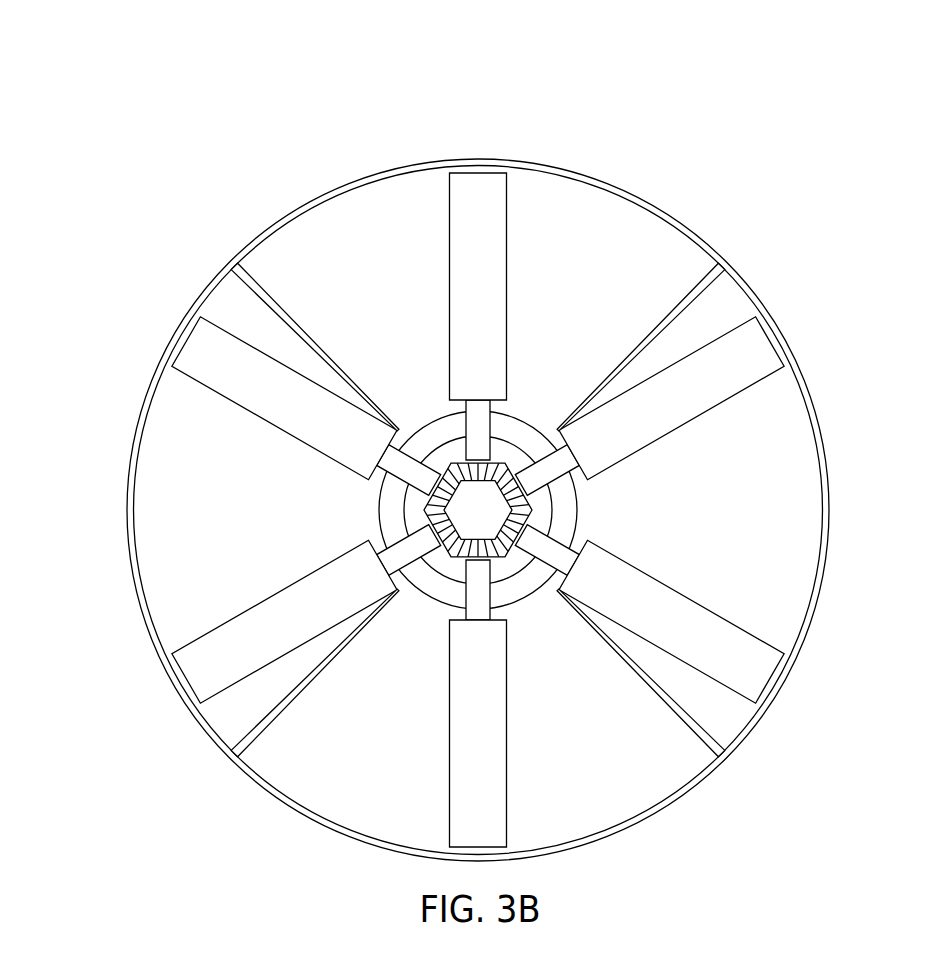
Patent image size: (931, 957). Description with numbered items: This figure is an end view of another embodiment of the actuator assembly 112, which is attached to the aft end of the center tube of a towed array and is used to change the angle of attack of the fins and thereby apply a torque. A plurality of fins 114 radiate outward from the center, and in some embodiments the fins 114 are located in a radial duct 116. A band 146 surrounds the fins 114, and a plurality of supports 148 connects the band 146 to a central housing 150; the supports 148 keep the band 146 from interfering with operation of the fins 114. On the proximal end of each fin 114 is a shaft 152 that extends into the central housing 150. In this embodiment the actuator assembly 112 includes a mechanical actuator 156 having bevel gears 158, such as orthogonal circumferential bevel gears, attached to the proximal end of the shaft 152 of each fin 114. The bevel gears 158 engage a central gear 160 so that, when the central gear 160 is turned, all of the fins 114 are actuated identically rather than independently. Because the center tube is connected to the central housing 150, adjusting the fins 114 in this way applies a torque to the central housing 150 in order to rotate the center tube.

The actuator assembly 112 is at (266, 83).
The fins 114 is at (476, 193).
The radial duct 116 is at (222, 272).
The band 146 is at (127, 518).
The supports 148 is at (705, 283).
The central housing 150 is at (578, 505).
The shaft 152 is at (473, 407).
The mechanical actuator 156 is at (353, 492).
The bevel gears 158 is at (512, 468).
The central gear 160 is at (518, 562).